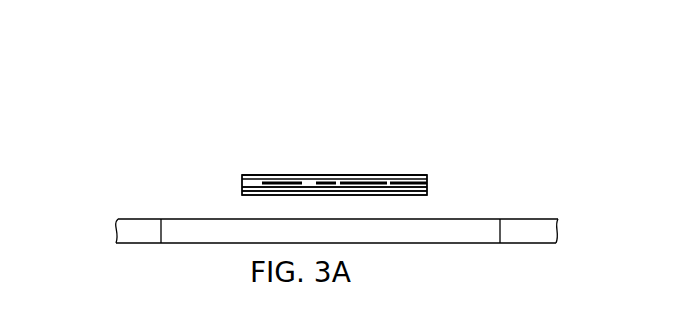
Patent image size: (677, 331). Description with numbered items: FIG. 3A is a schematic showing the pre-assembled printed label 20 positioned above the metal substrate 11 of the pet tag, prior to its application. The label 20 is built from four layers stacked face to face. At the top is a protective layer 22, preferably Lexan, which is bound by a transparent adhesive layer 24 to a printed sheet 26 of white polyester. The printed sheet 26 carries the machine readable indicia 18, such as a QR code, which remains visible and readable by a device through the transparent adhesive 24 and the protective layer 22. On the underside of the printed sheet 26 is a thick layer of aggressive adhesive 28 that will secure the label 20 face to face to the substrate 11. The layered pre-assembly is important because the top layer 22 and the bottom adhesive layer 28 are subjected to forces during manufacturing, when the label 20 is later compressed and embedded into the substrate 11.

The substrate 11 is at (517, 227).
The indicia 18 is at (344, 112).
The printed label 20 is at (212, 178).
The top protective layer 22 is at (428, 176).
The transparent adhesive layer 24 is at (428, 183).
The printed sheet 26 is at (428, 188).
The bottom adhesive layer 28 is at (428, 192).